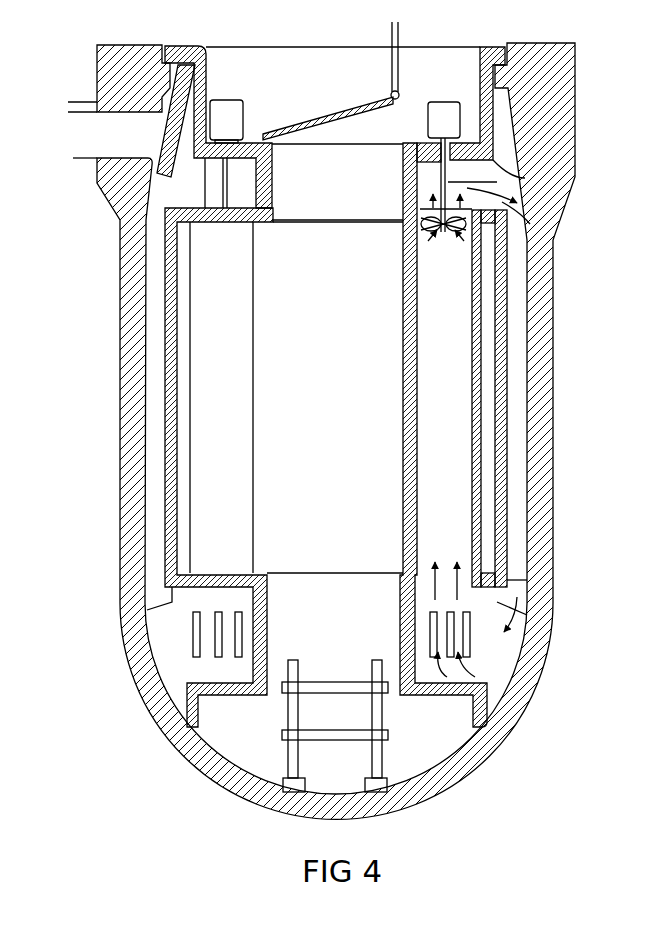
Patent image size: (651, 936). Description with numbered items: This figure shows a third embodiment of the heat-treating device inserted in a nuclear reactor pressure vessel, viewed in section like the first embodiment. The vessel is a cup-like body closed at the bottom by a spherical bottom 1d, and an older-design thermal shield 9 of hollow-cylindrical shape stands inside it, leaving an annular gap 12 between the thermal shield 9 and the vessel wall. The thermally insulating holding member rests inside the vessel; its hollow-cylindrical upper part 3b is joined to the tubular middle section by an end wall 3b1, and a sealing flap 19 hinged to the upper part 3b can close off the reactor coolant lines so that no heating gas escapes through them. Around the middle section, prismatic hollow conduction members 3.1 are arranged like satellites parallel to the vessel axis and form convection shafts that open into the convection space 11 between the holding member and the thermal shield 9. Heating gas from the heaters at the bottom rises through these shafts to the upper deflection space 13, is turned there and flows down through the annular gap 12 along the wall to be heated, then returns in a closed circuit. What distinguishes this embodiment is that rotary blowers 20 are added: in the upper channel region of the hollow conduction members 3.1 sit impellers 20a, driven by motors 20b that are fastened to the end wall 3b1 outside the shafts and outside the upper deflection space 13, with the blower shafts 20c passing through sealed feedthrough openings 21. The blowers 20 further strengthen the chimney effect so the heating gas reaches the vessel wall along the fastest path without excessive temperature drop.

The spherical bottom 1d is at (93, 160).
The sealing flap 19 is at (165, 174).
The upper part 3b is at (483, 116).
The end wall 3b1 is at (480, 168).
The rotary blower 20 is at (488, 166).
The impeller 20a is at (458, 222).
The motor 20b is at (443, 110).
The blower shaft 20c is at (440, 172).
The feedthrough opening 21 is at (433, 147).
The upper deflection space 13 is at (503, 206).
The convection space 11 is at (455, 384).
The hollow conduction member 3.1 is at (480, 290).
The annular gap 12 is at (518, 355).
The thermal shield 9 is at (505, 403).